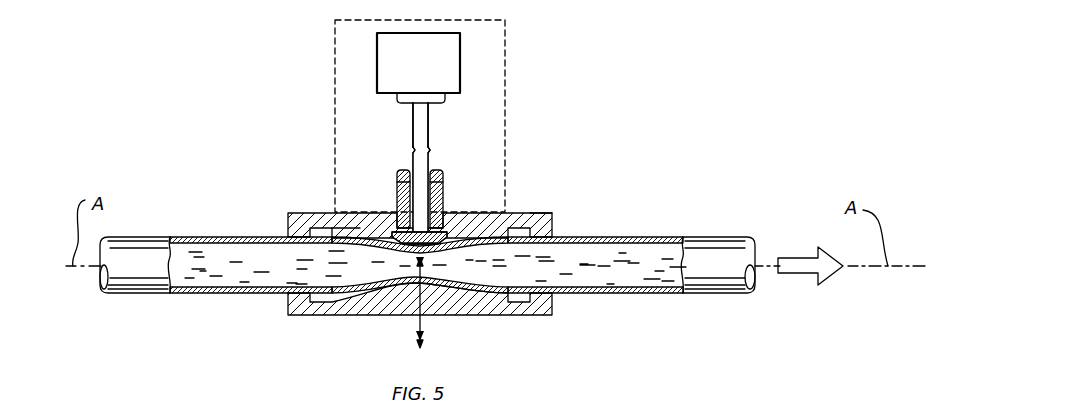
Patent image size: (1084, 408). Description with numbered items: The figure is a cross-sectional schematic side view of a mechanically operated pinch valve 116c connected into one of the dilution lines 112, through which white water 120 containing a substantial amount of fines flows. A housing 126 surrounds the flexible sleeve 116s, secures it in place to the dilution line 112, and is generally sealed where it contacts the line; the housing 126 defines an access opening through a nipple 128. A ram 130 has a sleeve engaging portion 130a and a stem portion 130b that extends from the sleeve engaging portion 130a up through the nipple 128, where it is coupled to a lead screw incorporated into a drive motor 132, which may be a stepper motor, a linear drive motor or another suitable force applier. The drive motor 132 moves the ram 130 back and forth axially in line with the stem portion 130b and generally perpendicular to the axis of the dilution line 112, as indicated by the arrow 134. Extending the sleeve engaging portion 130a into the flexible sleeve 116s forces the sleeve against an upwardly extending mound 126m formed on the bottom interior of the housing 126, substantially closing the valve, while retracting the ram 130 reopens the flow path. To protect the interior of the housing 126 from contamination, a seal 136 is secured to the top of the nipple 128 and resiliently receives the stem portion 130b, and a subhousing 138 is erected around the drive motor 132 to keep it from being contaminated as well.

The dilution line 112 is at (232, 237).
The mechanically operated pinch valve 116c is at (532, 191).
The flexible sleeve 116s is at (358, 229).
The white water 120 is at (261, 273).
The housing 126 is at (546, 213).
The mound 126m is at (448, 298).
The nipple 128 is at (418, 200).
The ram 130 is at (437, 224).
The sleeve engaging portion 130a is at (405, 242).
The stem portion 130b is at (400, 170).
The drive motor 132 is at (457, 80).
The arrow 134 is at (426, 331).
The seal 136 is at (432, 163).
The subhousing 138 is at (508, 47).